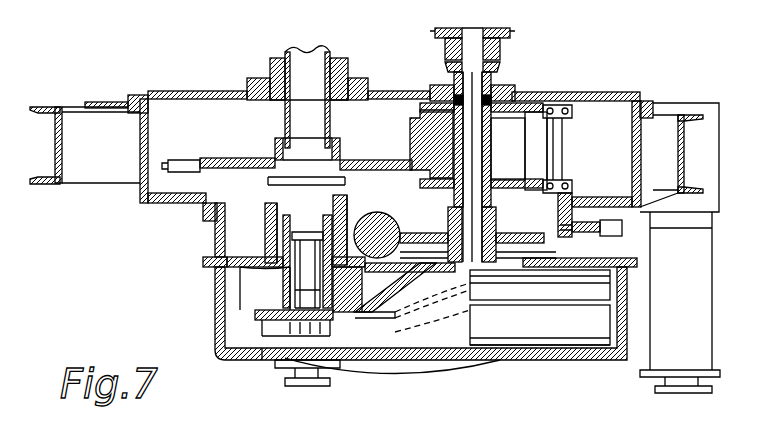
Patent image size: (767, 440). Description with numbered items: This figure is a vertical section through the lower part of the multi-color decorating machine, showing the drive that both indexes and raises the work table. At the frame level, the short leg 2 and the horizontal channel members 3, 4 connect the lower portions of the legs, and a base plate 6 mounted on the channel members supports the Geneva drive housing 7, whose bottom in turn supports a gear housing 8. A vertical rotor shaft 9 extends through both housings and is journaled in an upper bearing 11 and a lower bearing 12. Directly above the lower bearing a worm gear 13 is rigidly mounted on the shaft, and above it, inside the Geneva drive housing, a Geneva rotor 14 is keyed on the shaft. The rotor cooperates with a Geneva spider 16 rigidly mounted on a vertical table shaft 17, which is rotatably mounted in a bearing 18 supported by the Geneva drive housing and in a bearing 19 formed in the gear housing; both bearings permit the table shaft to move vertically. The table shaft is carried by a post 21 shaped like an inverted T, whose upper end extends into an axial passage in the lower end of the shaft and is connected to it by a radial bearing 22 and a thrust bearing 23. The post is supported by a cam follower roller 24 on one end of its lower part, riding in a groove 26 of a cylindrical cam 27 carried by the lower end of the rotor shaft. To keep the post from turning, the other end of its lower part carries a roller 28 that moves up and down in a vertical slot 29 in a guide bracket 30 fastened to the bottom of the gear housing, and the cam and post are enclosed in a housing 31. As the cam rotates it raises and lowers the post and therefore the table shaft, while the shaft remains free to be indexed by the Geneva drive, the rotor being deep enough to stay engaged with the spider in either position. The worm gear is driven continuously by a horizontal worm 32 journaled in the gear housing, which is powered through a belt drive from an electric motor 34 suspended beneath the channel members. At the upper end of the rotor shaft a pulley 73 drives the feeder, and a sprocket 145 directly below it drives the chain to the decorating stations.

The short leg 2 is at (712, 252).
The horizontal channel member 3 is at (58, 135).
The horizontal channel member 4 is at (684, 153).
The base plate 6 is at (100, 100).
The Geneva drive housing 7 is at (140, 180).
The gear housing 8 is at (218, 232).
The rotor shaft 9 is at (467, 152).
The bearing 11 is at (440, 86).
The bearing 12 is at (402, 275).
The worm gear 13 is at (575, 232).
The Geneva rotor 14 is at (414, 138).
The Geneva spider 16 is at (232, 158).
The table shaft 17 is at (296, 118).
The bearing 18 is at (268, 72).
The bearing 19 is at (283, 215).
The post 21 is at (300, 302).
The radial bearing 22 is at (283, 248).
The thrust bearing 23 is at (285, 312).
The cam follower roller 24 is at (340, 348).
The groove 26 is at (600, 294).
The cylindrical cam 27 is at (560, 335).
The roller 28 is at (268, 348).
The vertical slot 29 is at (270, 294).
The guide bracket 30 is at (222, 270).
The housing 31 is at (215, 326).
The worm 32 is at (382, 236).
The electric motor 34 is at (470, 372).
The pulley 73 is at (503, 44).
The sprocket 145 is at (500, 69).